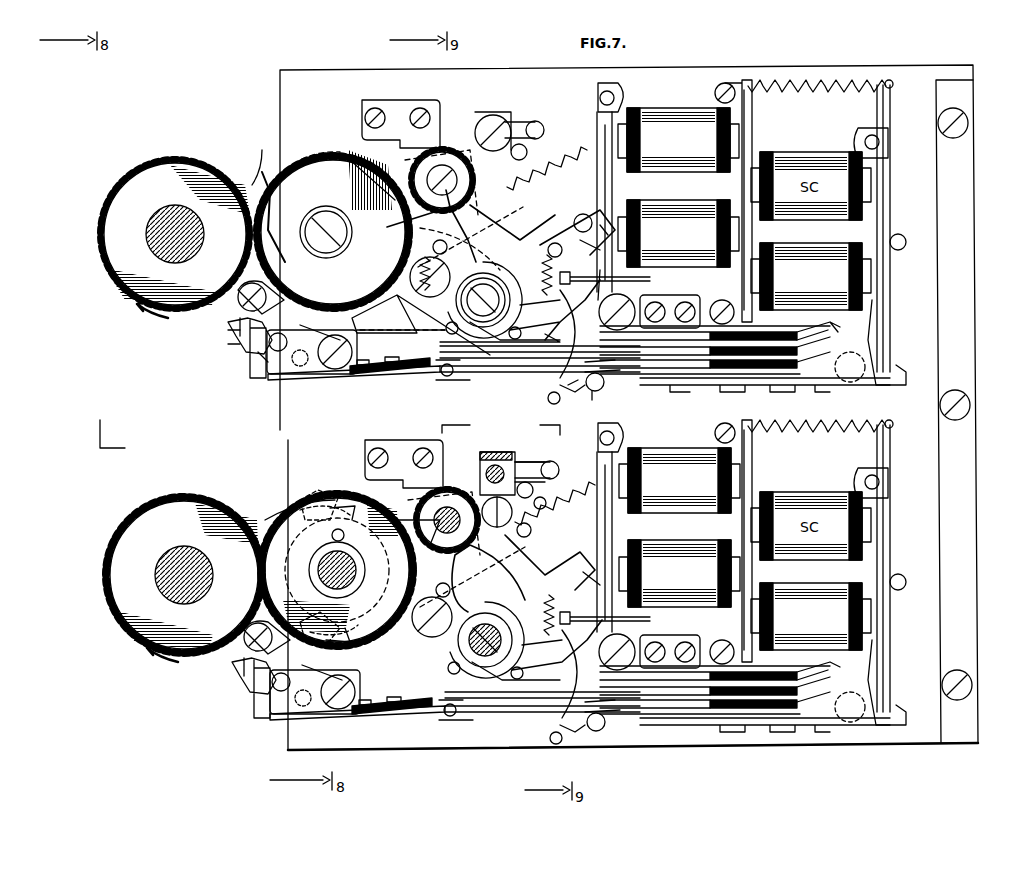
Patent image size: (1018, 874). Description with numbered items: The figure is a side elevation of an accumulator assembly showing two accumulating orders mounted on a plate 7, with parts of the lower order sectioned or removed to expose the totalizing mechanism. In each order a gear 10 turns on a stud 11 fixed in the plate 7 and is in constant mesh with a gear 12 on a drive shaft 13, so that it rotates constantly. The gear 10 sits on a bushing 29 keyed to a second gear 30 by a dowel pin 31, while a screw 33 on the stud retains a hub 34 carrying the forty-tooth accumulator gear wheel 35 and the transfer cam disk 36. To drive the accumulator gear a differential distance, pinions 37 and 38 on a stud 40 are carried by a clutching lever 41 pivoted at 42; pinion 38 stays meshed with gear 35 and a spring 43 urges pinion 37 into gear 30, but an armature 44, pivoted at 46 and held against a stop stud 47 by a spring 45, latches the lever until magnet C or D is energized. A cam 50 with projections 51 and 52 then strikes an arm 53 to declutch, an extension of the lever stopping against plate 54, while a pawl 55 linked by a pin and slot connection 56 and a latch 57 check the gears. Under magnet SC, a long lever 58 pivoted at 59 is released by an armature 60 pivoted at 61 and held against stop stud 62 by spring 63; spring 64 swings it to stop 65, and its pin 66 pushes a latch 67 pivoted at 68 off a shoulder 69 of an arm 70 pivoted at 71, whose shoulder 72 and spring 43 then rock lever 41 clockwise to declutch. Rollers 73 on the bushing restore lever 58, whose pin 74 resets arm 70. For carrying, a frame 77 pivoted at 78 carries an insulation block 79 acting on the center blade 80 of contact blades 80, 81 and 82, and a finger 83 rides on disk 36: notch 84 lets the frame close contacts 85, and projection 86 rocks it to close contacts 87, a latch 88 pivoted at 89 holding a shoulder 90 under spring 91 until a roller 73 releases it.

The plate 7 is at (930, 437).
The gear 10 is at (270, 537).
The stud 11 is at (356, 578).
The gear 12 is at (176, 500).
The shaft 13 is at (170, 553).
The bushing 29 is at (362, 566).
The gear 30 is at (288, 517).
The dowel pin 31 is at (344, 537).
The screw 33 is at (328, 252).
The hub 34 is at (324, 212).
The accumulator gear wheel 35 is at (334, 152).
The transfer cam disk 36 is at (318, 178).
The pinion 37 is at (490, 465).
The pinion 38 is at (580, 214).
The stud 40 is at (450, 505).
The clutching lever 41 is at (452, 642).
The pivot 42 is at (470, 642).
The spring 43 is at (492, 735).
The armature 44 is at (634, 535).
The spring 45 is at (572, 490).
The pivot 46 is at (614, 97).
The stop stud 47 is at (642, 215).
The cam 50 is at (285, 575).
The cam projection 51 is at (337, 572).
The projection 52 is at (360, 660).
The arm 53 is at (410, 514).
The plate 54 is at (398, 108).
The impositive latch or pawl 55 is at (472, 382).
The pin and slot connection 56 is at (505, 345).
The impositive latch 57 is at (505, 150).
The long lever 58 is at (660, 732).
The pivot 59 is at (700, 736).
The armature 60 is at (897, 645).
The pivot 61 is at (880, 482).
The stop stud 62 is at (900, 576).
The spring 63 is at (842, 430).
The spring 64 is at (578, 734).
The stop 65 is at (630, 746).
The pin 66 is at (542, 407).
The latch 67 is at (545, 545).
The pivot 68 is at (508, 512).
The shoulder 69 is at (582, 382).
The arm 70 is at (475, 575).
The pivot 71 is at (418, 625).
The shoulder 72 is at (628, 636).
The roller 73 is at (360, 505).
The pin 74 is at (580, 494).
The frame 77 is at (272, 714).
The pivot 78 is at (338, 372).
The insulation block 79 is at (420, 716).
The center blade 80 is at (520, 720).
The contact blade 81 is at (566, 688).
The contact blade 82 is at (541, 583).
The finger 83 is at (421, 325).
The notch 84 is at (273, 190).
The contacts 85 is at (444, 718).
The projection 86 is at (270, 188).
The contacts 87 is at (454, 552).
The latch 88 is at (244, 692).
The pivot 89 is at (240, 302).
The shoulder 90 is at (258, 364).
The spring 91 is at (230, 350).